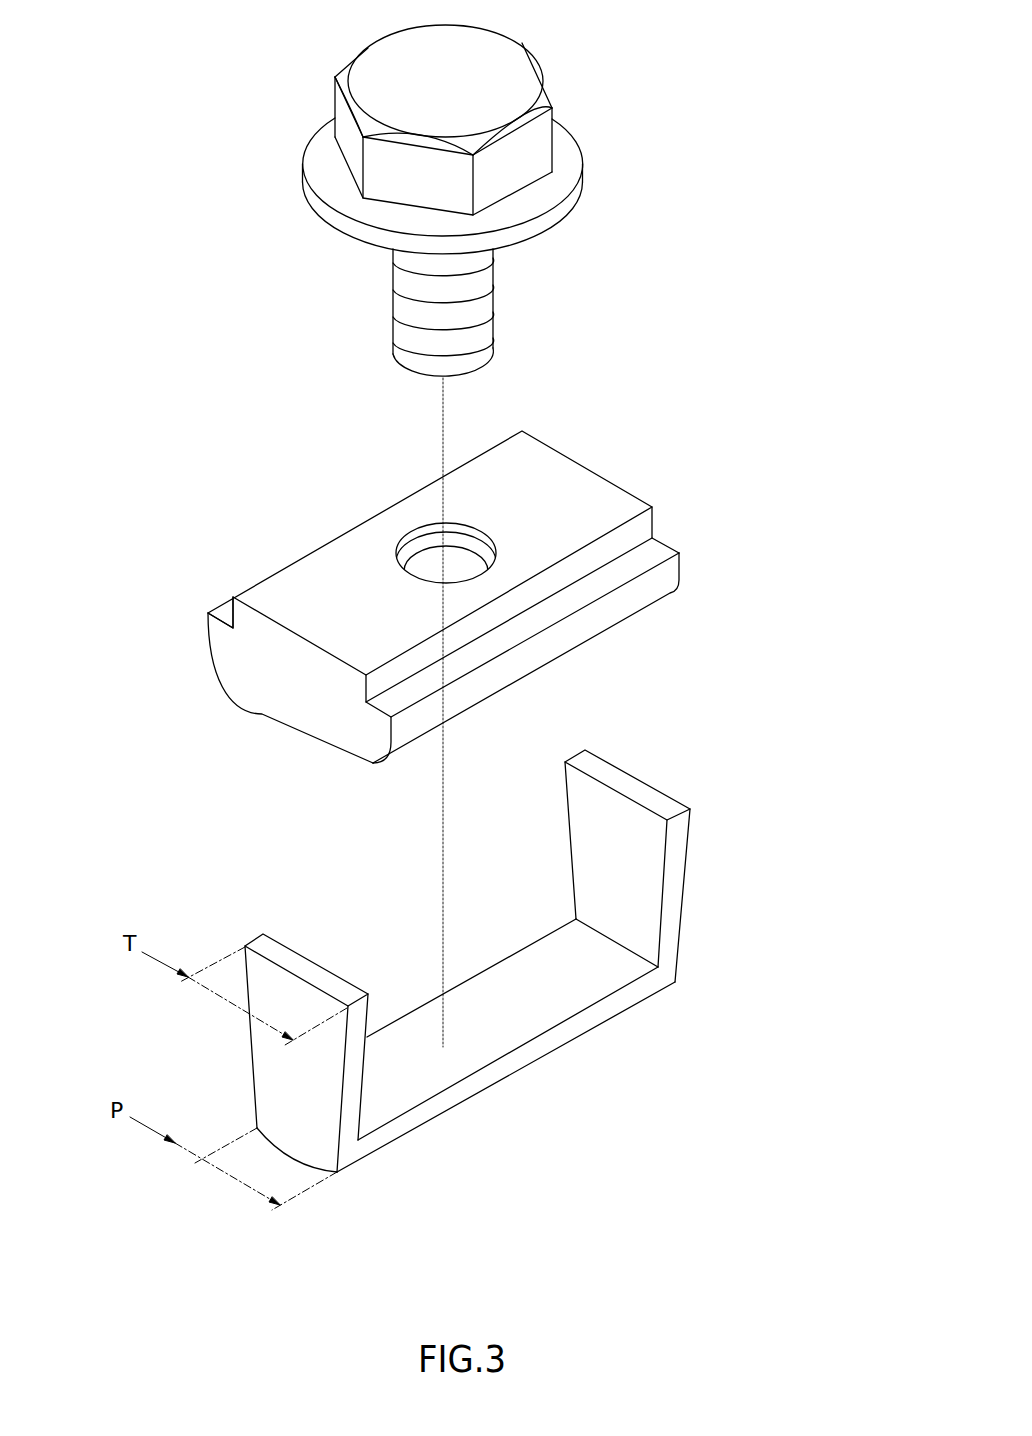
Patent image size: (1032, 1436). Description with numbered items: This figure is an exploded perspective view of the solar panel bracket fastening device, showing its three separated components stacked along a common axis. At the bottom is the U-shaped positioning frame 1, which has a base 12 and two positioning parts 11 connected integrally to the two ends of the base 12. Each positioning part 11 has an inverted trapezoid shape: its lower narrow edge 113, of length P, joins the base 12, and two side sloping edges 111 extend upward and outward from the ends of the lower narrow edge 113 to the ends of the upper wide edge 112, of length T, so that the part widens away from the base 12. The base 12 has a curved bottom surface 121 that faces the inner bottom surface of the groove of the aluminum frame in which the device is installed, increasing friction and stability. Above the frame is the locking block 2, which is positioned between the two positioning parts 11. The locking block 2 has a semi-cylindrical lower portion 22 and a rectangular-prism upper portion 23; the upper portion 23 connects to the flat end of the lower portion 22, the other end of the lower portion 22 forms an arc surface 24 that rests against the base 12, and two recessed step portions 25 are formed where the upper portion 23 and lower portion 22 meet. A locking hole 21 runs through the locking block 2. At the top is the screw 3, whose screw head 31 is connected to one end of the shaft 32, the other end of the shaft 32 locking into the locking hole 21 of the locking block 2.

The positioning frame 1 is at (490, 999).
The positioning part 11 is at (490, 999).
The side sloping edge 111 is at (255, 1088).
The upper wide edge 112 is at (306, 963).
The lower narrow edge 113 is at (287, 1153).
The base 12 is at (524, 1049).
The curved bottom surface 121 is at (491, 1082).
The locking block 2 is at (474, 575).
The locking hole 21 is at (424, 556).
The lower portion 22 is at (270, 706).
The upper portion 23 is at (286, 646).
The arc surface 24 is at (682, 596).
The recessed step portion 25 is at (676, 542).
The screw 3 is at (372, 188).
The screw head 31 is at (340, 95).
The shaft 32 is at (400, 348).